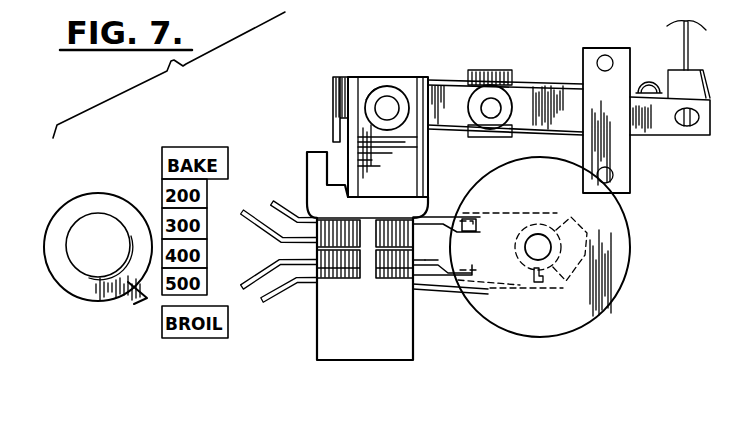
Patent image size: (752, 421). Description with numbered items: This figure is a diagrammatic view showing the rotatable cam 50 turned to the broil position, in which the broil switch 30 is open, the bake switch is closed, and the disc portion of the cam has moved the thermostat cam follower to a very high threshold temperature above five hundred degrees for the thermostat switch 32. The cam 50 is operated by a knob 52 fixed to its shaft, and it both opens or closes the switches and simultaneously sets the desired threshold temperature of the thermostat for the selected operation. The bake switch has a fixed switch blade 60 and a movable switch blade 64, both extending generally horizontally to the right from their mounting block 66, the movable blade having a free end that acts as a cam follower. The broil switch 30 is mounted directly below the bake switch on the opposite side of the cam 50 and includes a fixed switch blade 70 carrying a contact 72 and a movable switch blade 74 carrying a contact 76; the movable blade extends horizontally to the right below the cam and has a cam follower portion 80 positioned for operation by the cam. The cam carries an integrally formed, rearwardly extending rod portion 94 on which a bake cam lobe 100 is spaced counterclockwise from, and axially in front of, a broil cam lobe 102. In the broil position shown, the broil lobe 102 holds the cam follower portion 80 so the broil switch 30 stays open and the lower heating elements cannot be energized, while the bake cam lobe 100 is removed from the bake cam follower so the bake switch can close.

The broil switch 30 is at (453, 296).
The thermostat switch 32 is at (561, 87).
The rotatable cam 50 is at (600, 313).
The knob 52 is at (97, 197).
The fixed switch blade 60 is at (436, 220).
The movable switch blade 64 is at (428, 215).
The mounting block 66 is at (381, 361).
The fixed switch blade 70 is at (427, 264).
The contact 72 is at (516, 240).
The movable switch blade 74 is at (434, 288).
The contact 76 is at (492, 284).
The cam follower portion 80 is at (553, 293).
The rod portion 94 is at (593, 225).
The bake cam lobe 100 is at (575, 248).
The broil cam lobe 102 is at (587, 292).